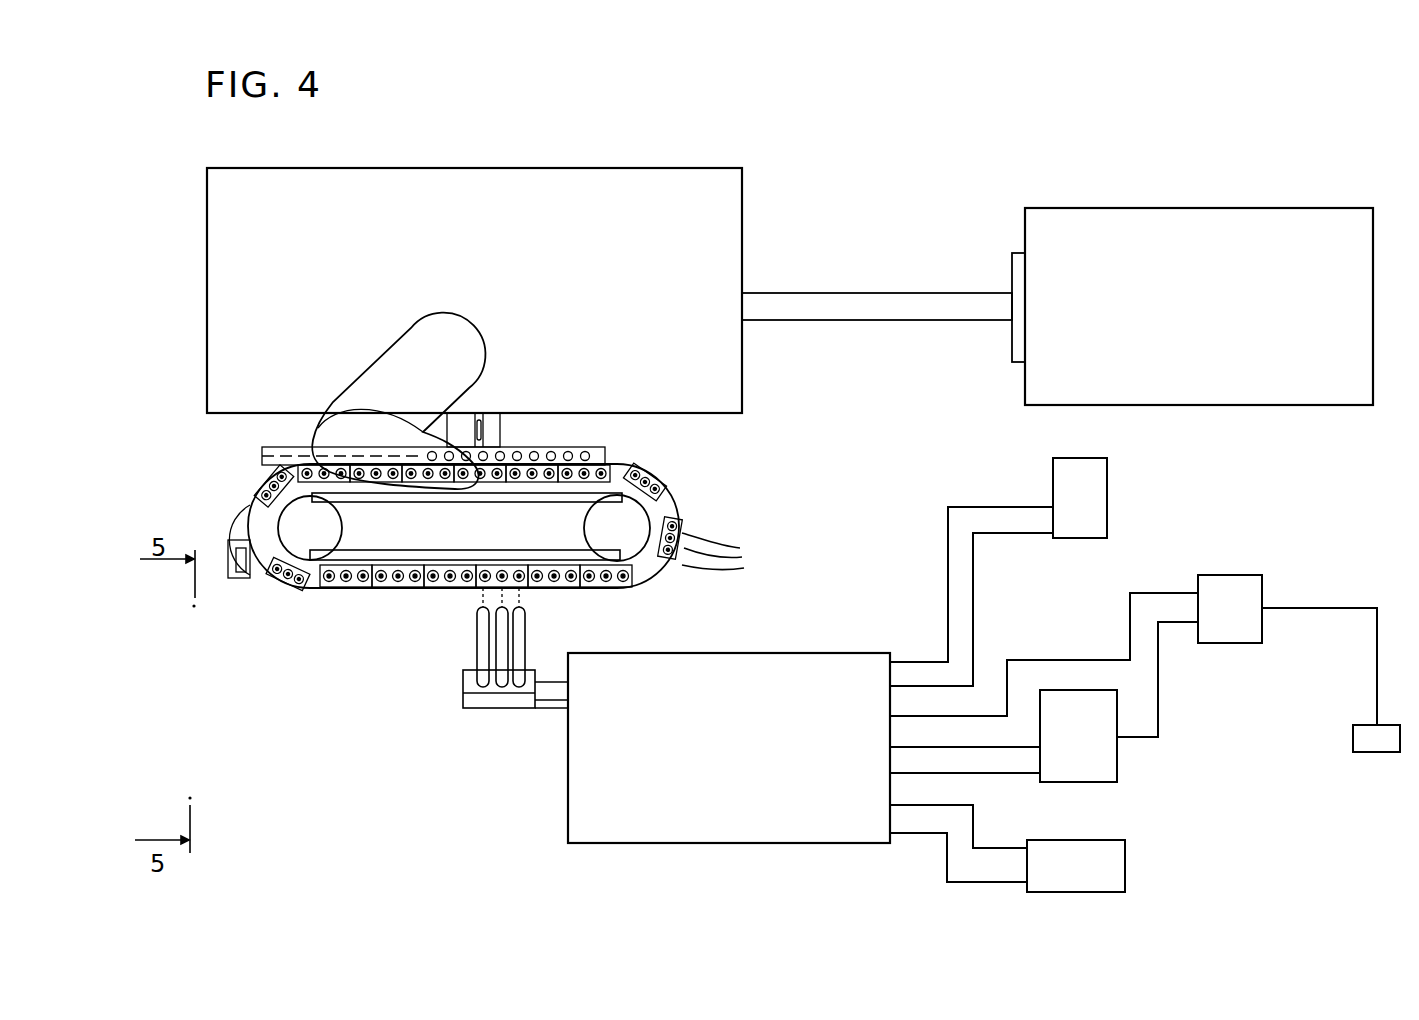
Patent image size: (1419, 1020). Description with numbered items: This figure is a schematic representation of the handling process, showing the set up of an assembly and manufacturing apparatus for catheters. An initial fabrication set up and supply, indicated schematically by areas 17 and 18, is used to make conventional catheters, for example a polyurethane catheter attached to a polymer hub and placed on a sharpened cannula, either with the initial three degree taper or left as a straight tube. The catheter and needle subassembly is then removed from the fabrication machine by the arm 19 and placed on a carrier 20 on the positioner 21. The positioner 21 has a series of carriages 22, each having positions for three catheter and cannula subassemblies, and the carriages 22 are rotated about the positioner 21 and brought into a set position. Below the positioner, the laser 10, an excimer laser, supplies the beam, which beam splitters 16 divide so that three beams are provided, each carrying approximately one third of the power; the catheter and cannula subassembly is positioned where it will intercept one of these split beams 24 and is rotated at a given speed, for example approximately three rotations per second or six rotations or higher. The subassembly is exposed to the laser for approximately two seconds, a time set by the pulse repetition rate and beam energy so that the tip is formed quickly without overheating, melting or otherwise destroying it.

The laser 10 is at (815, 652).
The beam splitters 16 is at (462, 684).
The initial fabrication set up and supply 17 is at (1213, 208).
The initial fabrication set up and supply 18 is at (722, 168).
The arm 19 is at (335, 425).
The carrier 20 is at (731, 552).
The positioner 21 is at (345, 592).
The carriages 22 is at (655, 472).
The split beams 24 is at (502, 601).